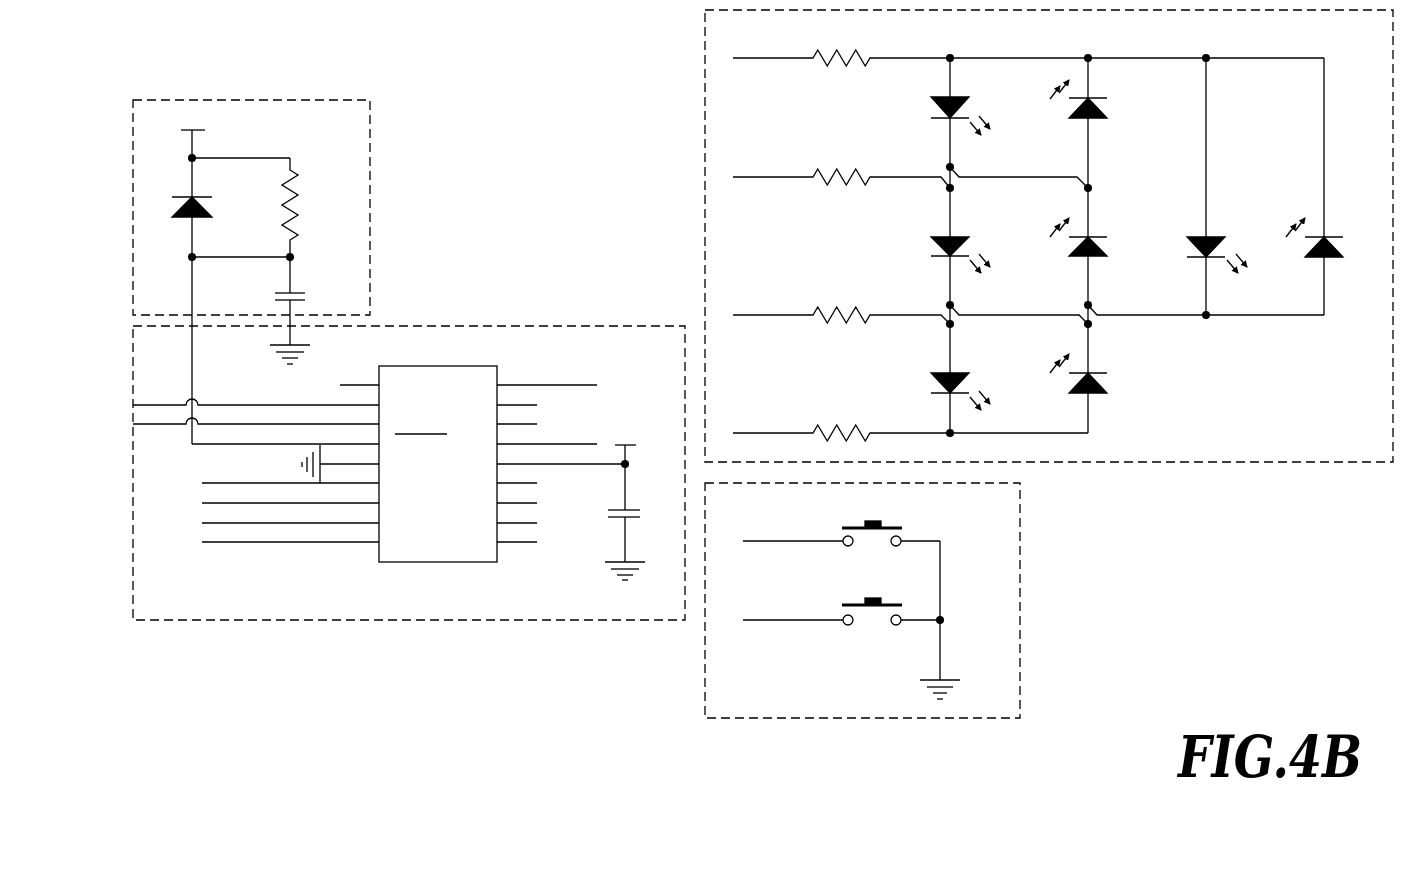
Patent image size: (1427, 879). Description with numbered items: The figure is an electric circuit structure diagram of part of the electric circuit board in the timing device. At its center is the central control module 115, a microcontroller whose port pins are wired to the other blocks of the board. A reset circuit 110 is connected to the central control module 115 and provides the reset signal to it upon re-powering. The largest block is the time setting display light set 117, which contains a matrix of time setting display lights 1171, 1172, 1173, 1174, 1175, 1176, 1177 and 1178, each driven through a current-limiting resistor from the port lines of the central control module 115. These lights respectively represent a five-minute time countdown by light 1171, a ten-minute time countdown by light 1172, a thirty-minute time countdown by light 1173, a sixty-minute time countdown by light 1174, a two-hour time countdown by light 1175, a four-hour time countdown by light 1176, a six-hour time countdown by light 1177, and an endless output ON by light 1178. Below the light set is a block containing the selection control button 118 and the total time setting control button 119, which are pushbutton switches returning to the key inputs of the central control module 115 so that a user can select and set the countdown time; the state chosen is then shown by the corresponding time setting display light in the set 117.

The reset circuit 110 is at (287, 100).
The central control module 115 is at (502, 326).
The time setting display light set 117 is at (1188, 463).
The selection control button 118 is at (895, 526).
The total time setting control button 119 is at (895, 603).
The time setting display light 1171 is at (1093, 120).
The time setting display light 1172 is at (945, 97).
The time setting display light 1173 is at (1095, 258).
The time setting display light 1174 is at (1330, 258).
The time setting display light 1175 is at (945, 237).
The time setting display light 1176 is at (1210, 237).
The time setting display light 1177 is at (1095, 395).
The time setting display light 1178 is at (945, 373).